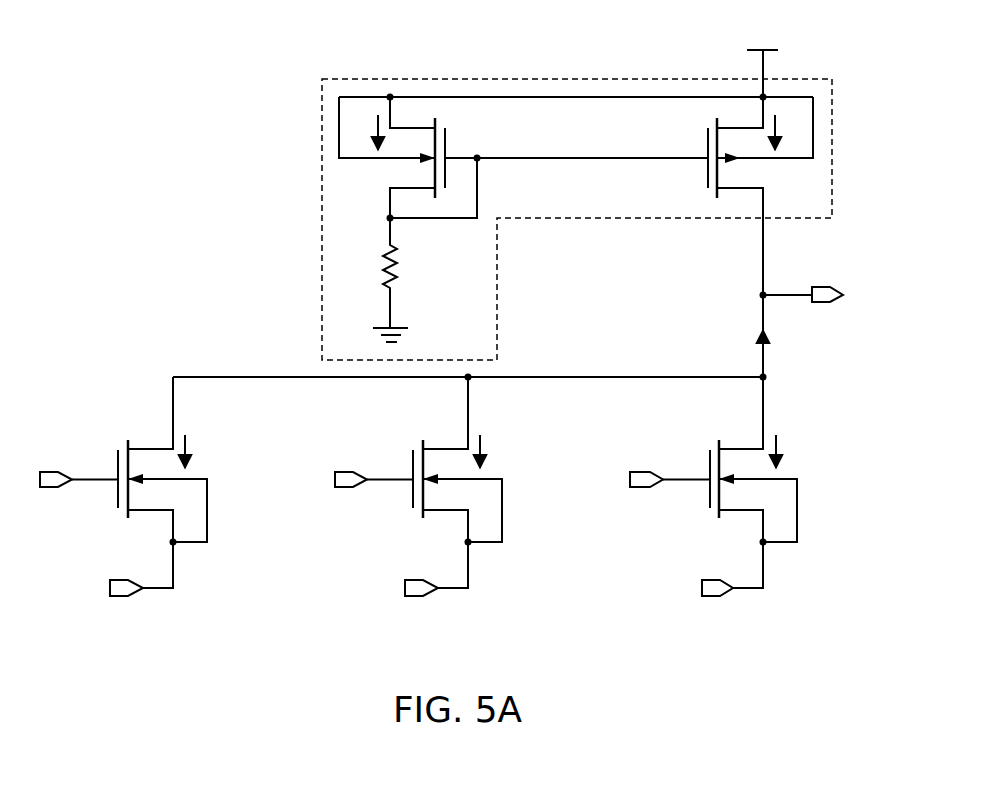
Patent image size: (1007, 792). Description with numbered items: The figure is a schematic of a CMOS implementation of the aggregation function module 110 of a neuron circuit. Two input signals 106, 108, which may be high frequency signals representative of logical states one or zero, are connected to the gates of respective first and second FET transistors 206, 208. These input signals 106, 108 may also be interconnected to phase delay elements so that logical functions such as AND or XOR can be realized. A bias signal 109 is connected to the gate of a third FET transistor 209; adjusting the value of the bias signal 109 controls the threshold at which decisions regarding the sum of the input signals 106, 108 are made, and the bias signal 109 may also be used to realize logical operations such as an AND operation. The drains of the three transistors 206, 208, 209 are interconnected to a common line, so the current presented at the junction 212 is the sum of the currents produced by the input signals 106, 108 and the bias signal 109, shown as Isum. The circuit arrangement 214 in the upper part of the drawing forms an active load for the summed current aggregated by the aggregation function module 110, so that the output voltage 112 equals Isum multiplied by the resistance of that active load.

The aggregation function module 110 is at (136, 53).
The circuit arrangement 214 is at (322, 230).
The junction 212 is at (763, 295).
The output voltage 112 is at (785, 295).
The input signal 106 is at (95, 477).
The input signal 108 is at (390, 477).
The bias signal 109 is at (685, 477).
The first FET transistor 206 is at (122, 513).
The second FET transistor 208 is at (417, 513).
The third FET transistor 209 is at (742, 513).